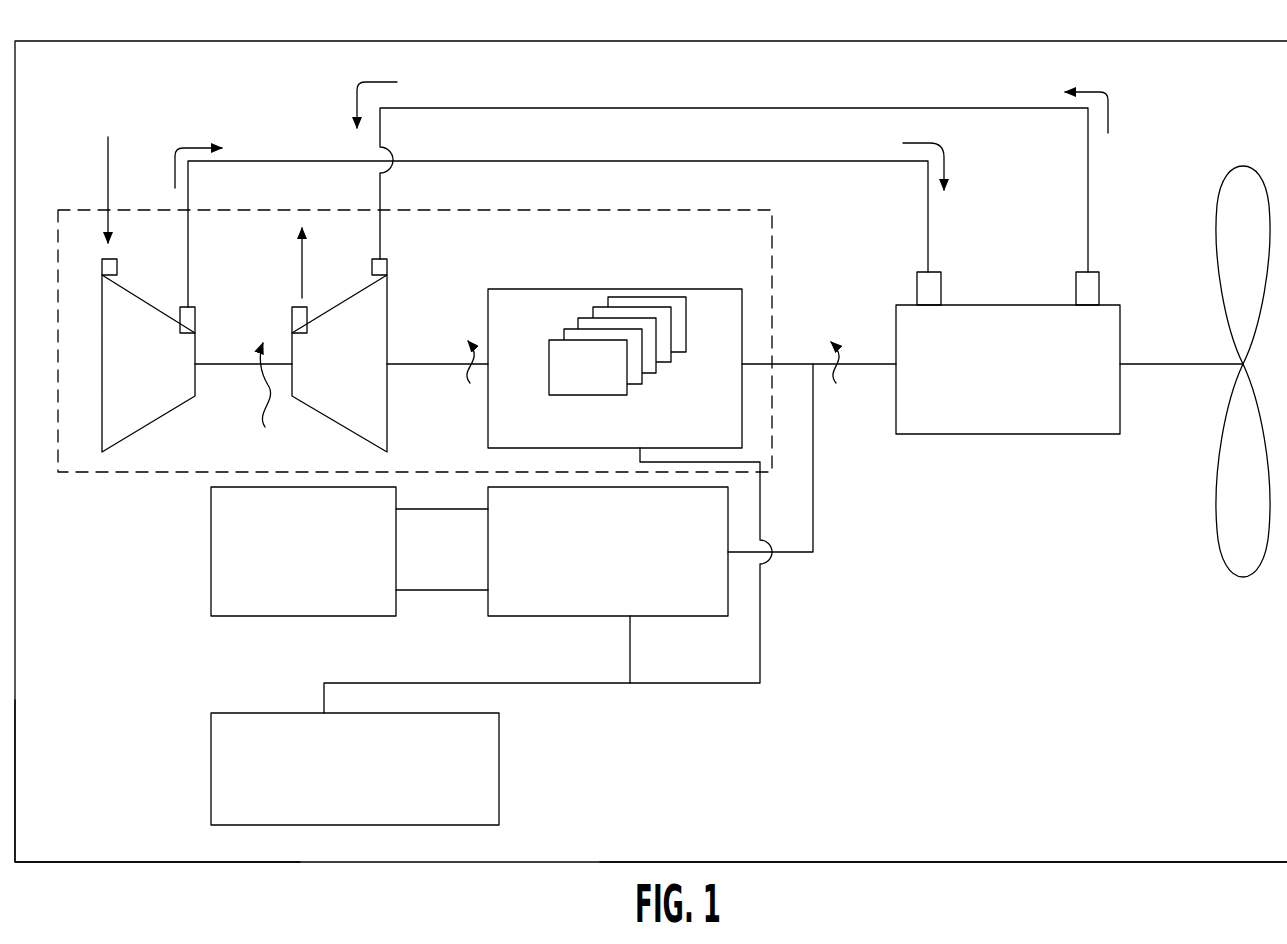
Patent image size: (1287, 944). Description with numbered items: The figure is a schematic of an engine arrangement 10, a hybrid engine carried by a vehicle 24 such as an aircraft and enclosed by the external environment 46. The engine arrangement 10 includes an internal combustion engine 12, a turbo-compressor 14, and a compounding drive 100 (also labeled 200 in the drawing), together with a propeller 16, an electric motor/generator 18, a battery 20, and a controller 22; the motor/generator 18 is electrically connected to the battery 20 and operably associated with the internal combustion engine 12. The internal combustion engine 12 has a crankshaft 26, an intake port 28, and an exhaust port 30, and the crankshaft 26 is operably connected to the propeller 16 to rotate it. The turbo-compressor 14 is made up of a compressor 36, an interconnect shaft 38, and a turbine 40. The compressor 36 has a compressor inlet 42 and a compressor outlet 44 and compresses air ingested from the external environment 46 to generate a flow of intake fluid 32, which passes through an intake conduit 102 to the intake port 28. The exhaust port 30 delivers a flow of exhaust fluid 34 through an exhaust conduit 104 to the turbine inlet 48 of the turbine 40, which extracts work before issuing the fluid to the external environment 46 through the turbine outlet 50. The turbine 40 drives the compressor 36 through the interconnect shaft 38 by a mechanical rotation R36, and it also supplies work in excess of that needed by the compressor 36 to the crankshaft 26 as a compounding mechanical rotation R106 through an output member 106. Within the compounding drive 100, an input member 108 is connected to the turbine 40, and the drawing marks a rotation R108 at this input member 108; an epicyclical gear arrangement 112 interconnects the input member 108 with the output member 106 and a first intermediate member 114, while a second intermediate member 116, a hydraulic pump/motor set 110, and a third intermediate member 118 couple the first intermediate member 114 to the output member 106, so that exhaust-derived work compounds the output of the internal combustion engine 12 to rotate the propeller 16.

The engine arrangement 10 is at (82, 829).
The internal combustion engine 12 is at (952, 434).
The turbo-compressor 14 is at (772, 262).
The propeller 16 is at (1218, 545).
The electric motor/generator 18 is at (560, 616).
The battery 20 is at (211, 538).
The controller 22 is at (499, 773).
The vehicle 24 is at (950, 862).
The crankshaft 26 is at (1180, 364).
The intake port 28 is at (941, 290).
The exhaust port 30 is at (1099, 290).
The intake fluid 32 is at (176, 152).
The exhaust fluid 34 is at (352, 83).
The compressor 36 is at (157, 419).
The interconnect shaft 38 is at (228, 363).
The turbine 40 is at (388, 415).
The compressor inlet 42 is at (117, 271).
The compressor outlet 44 is at (195, 313).
The external environment 46 is at (232, 29).
The turbine inlet 48 is at (387, 268).
The turbine outlet 50 is at (307, 311).
The compounding drive 100 is at (615, 344).
The thermoelectric generator (alternate embodiment) 200 is at (615, 344).
The intake conduit 102 is at (722, 161).
The exhaust conduit 104 is at (862, 108).
The output member 106 is at (863, 372).
The input member 108 is at (415, 363).
The hydraulic pump/motor set 110 is at (572, 396).
The epicyclical gear arrangement 112 is at (633, 385).
The first intermediate member 114 is at (651, 374).
The second intermediate member 116 is at (662, 363).
The third intermediate member 118 is at (686, 336).
The mechanical rotation R36 is at (286, 407).
The compounding mechanical rotation R106 is at (833, 330).
The shaft 108 rotation direction R108 is at (495, 308).